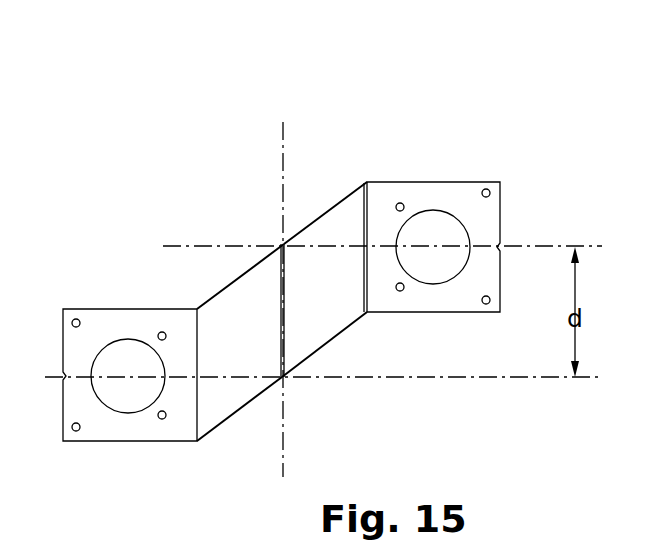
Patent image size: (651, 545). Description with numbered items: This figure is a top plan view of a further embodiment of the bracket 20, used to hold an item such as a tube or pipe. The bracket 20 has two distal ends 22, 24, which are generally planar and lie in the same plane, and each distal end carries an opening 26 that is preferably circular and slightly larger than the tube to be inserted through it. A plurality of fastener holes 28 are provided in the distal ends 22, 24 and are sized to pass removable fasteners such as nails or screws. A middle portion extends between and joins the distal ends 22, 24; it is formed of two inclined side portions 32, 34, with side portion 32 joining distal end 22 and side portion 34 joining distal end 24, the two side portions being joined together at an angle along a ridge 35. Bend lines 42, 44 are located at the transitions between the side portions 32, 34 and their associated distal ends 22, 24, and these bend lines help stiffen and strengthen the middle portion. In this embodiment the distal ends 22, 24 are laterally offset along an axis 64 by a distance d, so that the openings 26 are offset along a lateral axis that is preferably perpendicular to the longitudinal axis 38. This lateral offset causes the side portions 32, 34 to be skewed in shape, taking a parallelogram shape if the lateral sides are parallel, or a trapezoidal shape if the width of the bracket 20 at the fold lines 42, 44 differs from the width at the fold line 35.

The bracket 20 is at (236, 222).
The distal end 22 is at (380, 195).
The distal end 24 is at (123, 323).
The opening 26 is at (423, 235).
The fastener hole 28 is at (489, 190).
The side portion 32 is at (320, 230).
The side portion 34 is at (232, 325).
The ridge 35 is at (285, 340).
The longitudinal axis 38 is at (530, 246).
The bend line 42 is at (367, 312).
The bend line 44 is at (197, 441).
The axis 64 is at (282, 150).